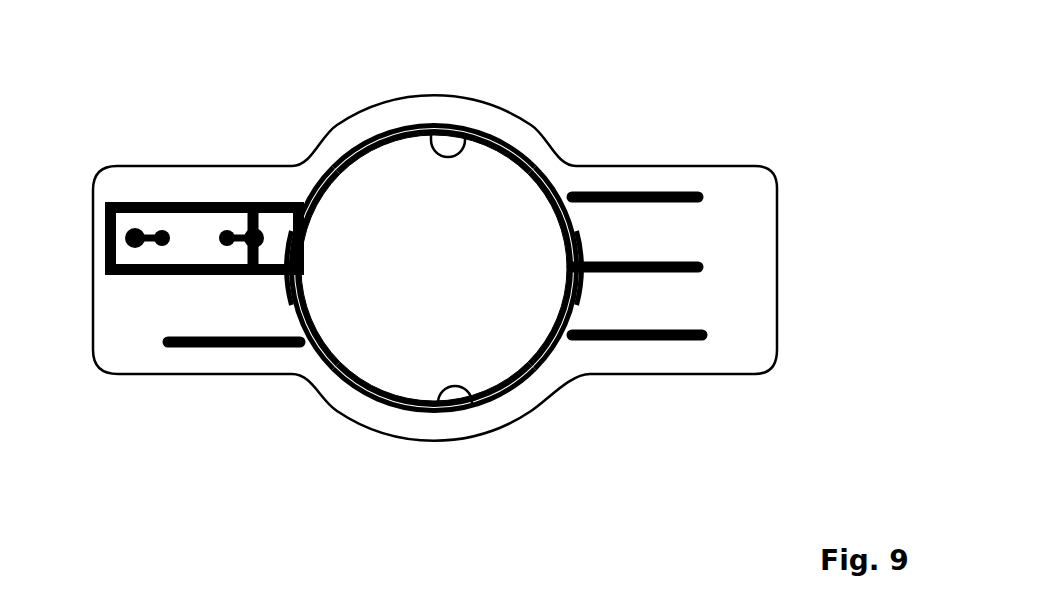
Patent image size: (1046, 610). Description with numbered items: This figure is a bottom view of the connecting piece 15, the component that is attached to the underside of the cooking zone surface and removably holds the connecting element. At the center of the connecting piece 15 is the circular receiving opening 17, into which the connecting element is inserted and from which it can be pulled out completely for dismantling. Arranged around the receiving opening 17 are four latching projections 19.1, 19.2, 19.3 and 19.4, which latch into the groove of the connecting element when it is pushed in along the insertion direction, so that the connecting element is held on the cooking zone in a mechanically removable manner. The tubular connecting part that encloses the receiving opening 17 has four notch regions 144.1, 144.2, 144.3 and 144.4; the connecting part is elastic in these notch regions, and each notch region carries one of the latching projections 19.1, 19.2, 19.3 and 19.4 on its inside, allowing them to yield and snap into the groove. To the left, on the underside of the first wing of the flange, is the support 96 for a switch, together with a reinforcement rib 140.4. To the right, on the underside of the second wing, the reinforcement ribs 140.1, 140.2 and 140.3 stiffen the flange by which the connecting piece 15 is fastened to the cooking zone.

The connecting piece 15 is at (688, 120).
The receiving opening 17 is at (411, 305).
The latching projection 19.1 is at (465, 125).
The latching projection 19.2 is at (533, 383).
The latching projection 19.3 is at (480, 403).
The latching projection 19.4 is at (307, 268).
The support 96 is at (188, 227).
The reinforcement rib 140.1 is at (600, 192).
The reinforcement rib 140.2 is at (693, 262).
The reinforcement rib 140.3 is at (642, 347).
The reinforcement rib 140.4 is at (203, 348).
The notch region 144.1 is at (428, 143).
The notch region 144.2 is at (587, 257).
The notch region 144.3 is at (433, 400).
The notch region 144.4 is at (290, 280).